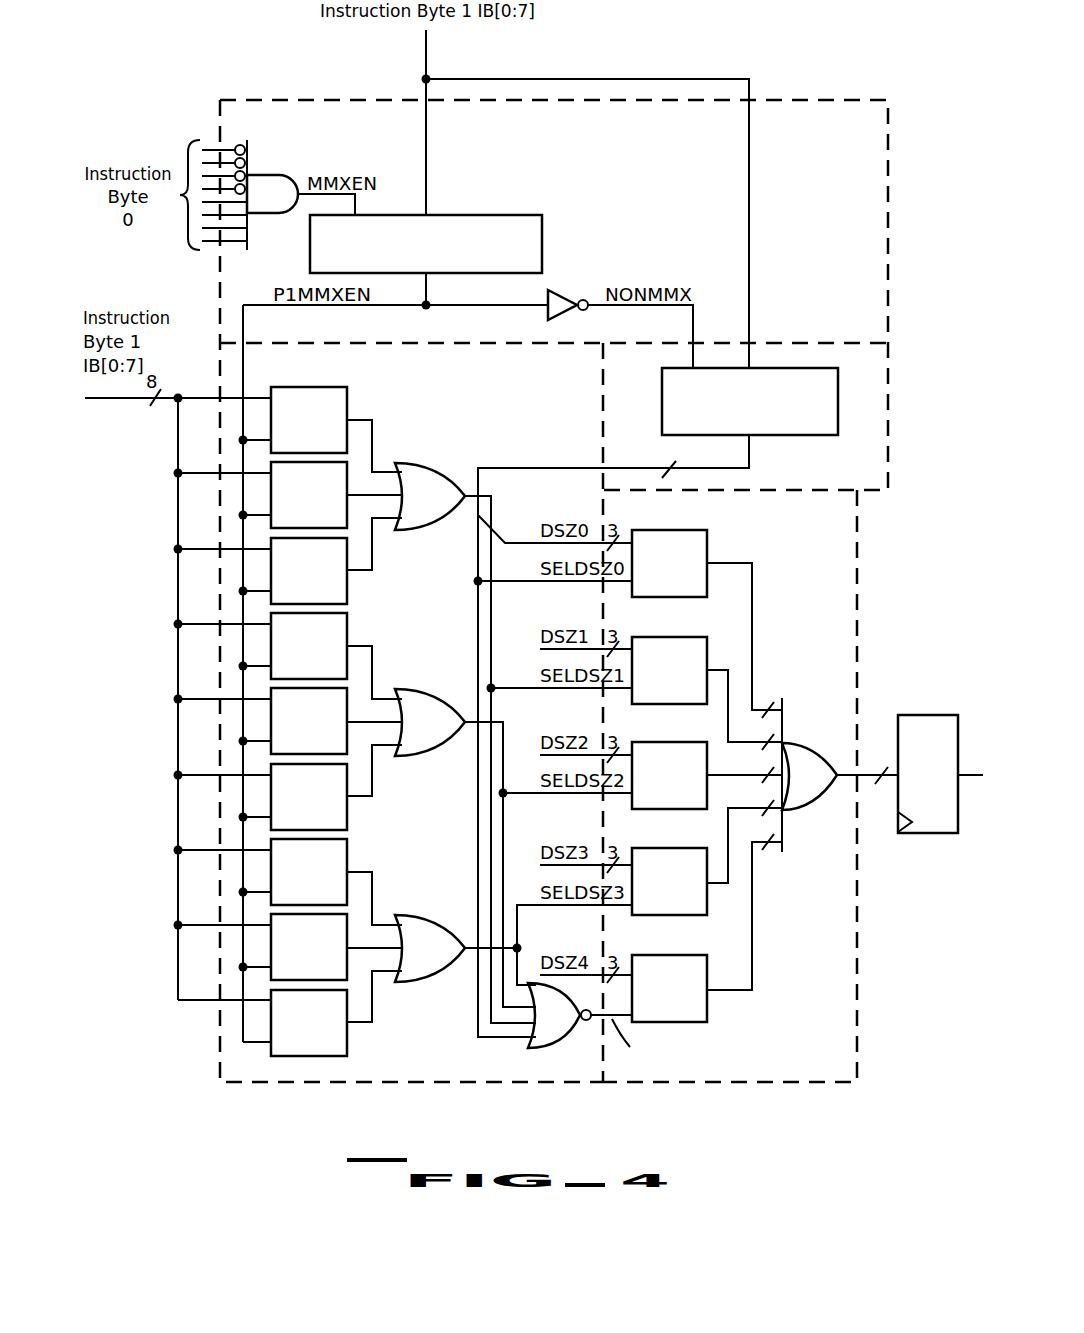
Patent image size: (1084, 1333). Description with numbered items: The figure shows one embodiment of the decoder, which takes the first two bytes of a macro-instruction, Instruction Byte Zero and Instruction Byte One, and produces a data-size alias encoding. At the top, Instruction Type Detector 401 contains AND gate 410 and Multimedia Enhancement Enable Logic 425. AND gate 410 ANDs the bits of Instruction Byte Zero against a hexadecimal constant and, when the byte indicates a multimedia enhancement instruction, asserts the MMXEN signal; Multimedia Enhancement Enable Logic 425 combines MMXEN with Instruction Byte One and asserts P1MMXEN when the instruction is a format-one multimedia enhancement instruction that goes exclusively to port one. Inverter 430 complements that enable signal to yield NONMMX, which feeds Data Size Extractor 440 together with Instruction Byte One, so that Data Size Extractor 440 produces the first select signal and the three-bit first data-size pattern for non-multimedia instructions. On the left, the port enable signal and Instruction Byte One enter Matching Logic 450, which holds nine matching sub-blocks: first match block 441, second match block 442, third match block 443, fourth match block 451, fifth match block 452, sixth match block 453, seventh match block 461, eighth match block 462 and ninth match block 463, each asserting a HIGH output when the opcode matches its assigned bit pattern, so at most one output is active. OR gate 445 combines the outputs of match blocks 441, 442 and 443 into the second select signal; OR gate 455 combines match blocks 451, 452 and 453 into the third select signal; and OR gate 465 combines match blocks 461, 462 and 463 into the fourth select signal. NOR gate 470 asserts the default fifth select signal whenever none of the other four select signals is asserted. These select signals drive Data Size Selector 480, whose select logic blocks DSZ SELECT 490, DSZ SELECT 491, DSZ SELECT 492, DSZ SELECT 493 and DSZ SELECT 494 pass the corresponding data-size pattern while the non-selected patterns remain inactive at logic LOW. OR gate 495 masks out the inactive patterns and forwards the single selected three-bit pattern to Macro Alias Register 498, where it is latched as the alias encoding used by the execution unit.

The Instruction Type Detector 401 is at (872, 140).
The AND gate 410 is at (262, 180).
The Multimedia Enhancement Enable Logic 425 is at (545, 233).
The Inverter 430 is at (557, 294).
The Data Size Extractor 440 is at (838, 401).
The Match 1A 441 is at (347, 408).
The Match 1B 442 is at (347, 467).
The Match 1C 443 is at (347, 590).
The OR gate 445 is at (445, 507).
The Matching Logic 450 is at (226, 1072).
The Match 2A 451 is at (347, 634).
The Match 2B 452 is at (347, 693).
The Match 2C 453 is at (347, 815).
The OR gate 455 is at (445, 733).
The Match 3A 461 is at (347, 860).
The Match 3B 462 is at (347, 919).
The Match 3C 463 is at (347, 1041).
The OR gate 465 is at (445, 959).
The NOR gate 470 is at (577, 1026).
The Data Size Selector 480 is at (840, 611).
The DSZ SELECT0 490 is at (689, 530).
The DSZ SELECT1 491 is at (681, 637).
The DSZ SELECT2 492 is at (673, 742).
The DSZ SELECT3 493 is at (673, 848).
The DSZ SELECT4 494 is at (689, 955).
The OR gate 495 is at (833, 786).
The Macro Alias Register 498 is at (927, 723).